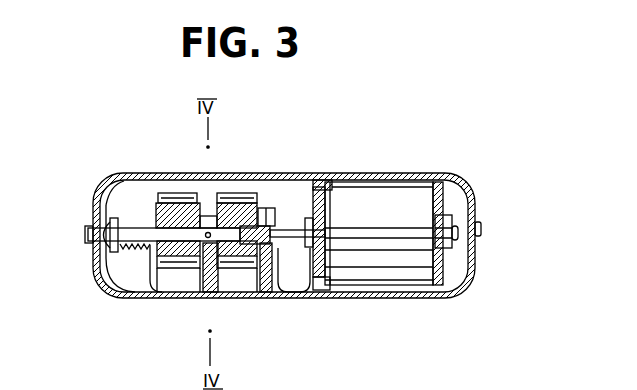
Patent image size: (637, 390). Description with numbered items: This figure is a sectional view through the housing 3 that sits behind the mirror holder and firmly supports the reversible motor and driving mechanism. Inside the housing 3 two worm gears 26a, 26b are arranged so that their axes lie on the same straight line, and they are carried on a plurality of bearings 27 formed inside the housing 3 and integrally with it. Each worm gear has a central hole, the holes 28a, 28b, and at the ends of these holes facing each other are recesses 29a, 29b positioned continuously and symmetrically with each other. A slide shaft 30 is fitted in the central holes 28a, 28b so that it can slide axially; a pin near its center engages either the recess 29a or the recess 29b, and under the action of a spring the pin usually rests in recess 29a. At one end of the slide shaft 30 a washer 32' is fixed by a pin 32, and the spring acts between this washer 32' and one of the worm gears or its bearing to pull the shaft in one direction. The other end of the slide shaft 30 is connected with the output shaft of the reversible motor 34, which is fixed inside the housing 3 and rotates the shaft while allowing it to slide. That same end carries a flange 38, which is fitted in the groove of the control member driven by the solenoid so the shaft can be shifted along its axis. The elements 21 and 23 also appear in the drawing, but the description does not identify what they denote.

The housing 3 is at (318, 173).
The end cap 21 is at (113, 180).
The washer 32' is at (79, 200).
The pin 32 is at (134, 251).
The central hole 28a is at (149, 193).
The worm gear 26a is at (179, 203).
The recess 29b is at (224, 185).
The recess 29a is at (223, 295).
The bearings 27 is at (120, 297).
The slide shaft 30 is at (188, 252).
The central hole 28b is at (257, 298).
The worm gear 26b is at (255, 184).
The flange 38 is at (285, 184).
The motor bracket 23 is at (353, 172).
The reversible motor 34 is at (391, 233).